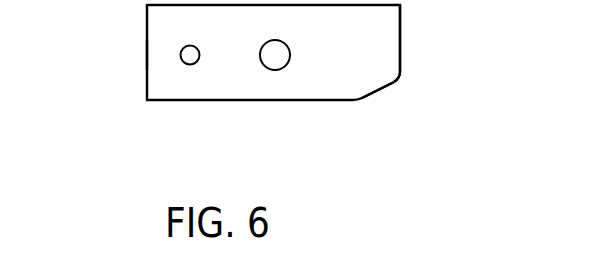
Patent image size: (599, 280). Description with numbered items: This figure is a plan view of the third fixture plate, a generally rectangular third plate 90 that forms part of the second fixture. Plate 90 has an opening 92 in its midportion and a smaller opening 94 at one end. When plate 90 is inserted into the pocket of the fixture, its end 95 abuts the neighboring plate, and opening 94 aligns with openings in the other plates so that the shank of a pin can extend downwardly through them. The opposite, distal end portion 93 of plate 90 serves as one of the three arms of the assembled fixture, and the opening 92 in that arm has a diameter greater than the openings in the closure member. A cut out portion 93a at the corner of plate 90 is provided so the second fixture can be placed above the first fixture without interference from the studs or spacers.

The third plate 90 is at (178, 105).
The opening in the midportion 92 is at (278, 67).
The distal end portion 93 is at (375, 62).
The cut out portion 93a is at (377, 92).
The opening at one end 94 is at (190, 65).
The end 95 is at (147, 56).